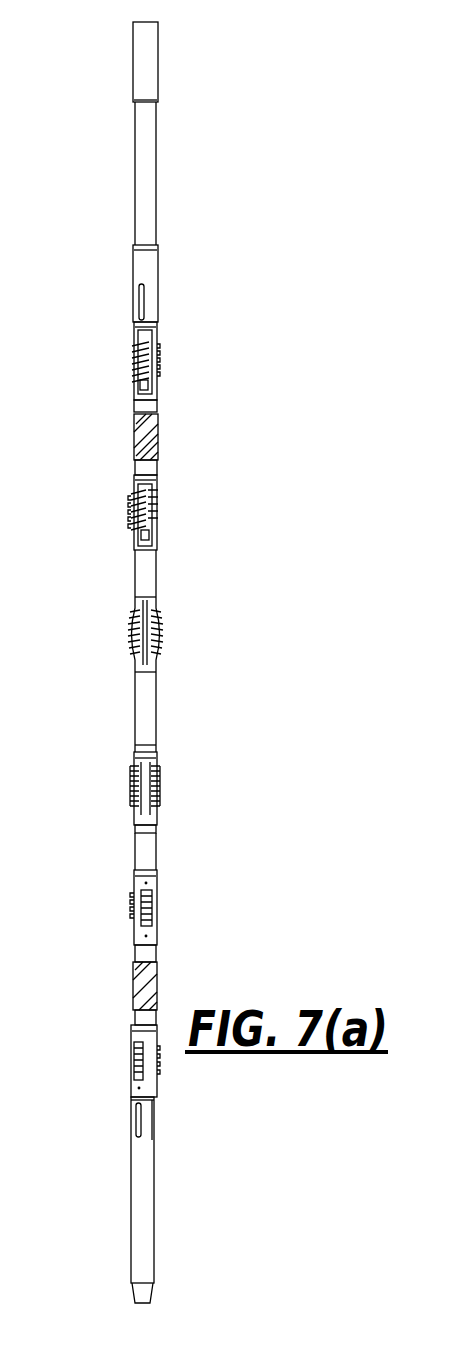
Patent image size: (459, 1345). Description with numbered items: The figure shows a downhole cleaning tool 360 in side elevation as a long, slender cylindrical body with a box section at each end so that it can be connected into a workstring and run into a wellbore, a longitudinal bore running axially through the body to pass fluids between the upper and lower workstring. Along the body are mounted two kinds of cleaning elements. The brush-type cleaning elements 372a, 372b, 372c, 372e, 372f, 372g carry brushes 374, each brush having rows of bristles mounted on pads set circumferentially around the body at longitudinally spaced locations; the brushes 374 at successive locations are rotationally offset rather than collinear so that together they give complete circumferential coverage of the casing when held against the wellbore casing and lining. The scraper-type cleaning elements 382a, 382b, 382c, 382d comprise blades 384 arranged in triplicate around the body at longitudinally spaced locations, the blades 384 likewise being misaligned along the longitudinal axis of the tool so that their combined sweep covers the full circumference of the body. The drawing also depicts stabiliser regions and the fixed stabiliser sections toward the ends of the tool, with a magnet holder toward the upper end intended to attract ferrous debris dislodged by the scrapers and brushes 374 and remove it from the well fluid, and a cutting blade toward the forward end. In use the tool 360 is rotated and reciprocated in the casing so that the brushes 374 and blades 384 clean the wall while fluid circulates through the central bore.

The cleaning tool 360 is at (183, 110).
The brushes 374 is at (134, 347).
The cleaning element 372a is at (161, 358).
The cleaning element 372b is at (140, 382).
The cleaning element 372c is at (131, 362).
The cleaning element 372e is at (131, 503).
The cleaning element 372f is at (141, 535).
The cleaning element 372g is at (158, 515).
The blades 384 is at (133, 776).
The scraper 382a is at (133, 796).
The scraper 382b is at (161, 795).
The scraper 382c is at (132, 920).
The scraper 382d is at (155, 930).